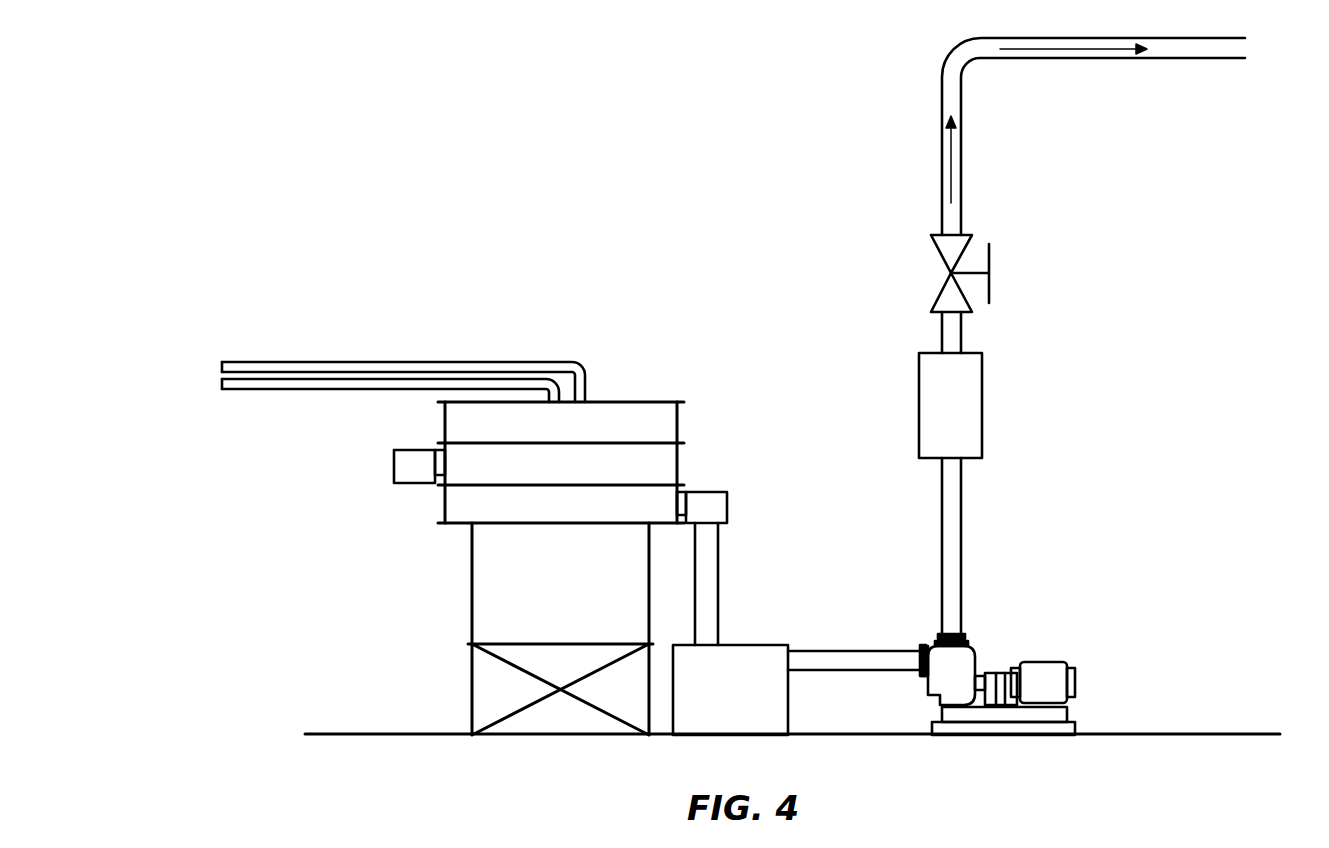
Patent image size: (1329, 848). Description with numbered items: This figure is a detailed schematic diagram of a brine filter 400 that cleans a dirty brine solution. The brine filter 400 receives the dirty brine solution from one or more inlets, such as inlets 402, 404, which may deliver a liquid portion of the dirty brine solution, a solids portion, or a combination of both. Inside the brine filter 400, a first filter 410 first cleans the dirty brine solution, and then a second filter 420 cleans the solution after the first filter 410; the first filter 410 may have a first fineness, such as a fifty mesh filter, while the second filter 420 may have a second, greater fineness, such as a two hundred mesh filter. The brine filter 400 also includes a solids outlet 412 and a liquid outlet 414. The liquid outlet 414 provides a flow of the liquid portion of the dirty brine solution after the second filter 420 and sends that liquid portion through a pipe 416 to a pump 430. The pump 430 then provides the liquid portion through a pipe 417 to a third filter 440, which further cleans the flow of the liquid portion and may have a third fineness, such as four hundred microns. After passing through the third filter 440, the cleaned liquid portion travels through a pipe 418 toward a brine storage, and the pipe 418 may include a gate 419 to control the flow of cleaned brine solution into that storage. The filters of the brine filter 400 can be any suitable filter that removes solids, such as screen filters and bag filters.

The brine filter 400 is at (477, 181).
The inlet 402 is at (282, 360).
The inlet 404 is at (298, 392).
The first filter 410 is at (677, 422).
The second filter 420 is at (677, 463).
The solids outlet 412 is at (394, 467).
The liquid outlet 414 is at (727, 506).
The pipe 416 is at (817, 654).
The pipe 417 is at (952, 537).
The pipe 418 is at (961, 120).
The gate 419 is at (991, 268).
The pump 430 is at (1043, 662).
The third filter 440 is at (982, 373).